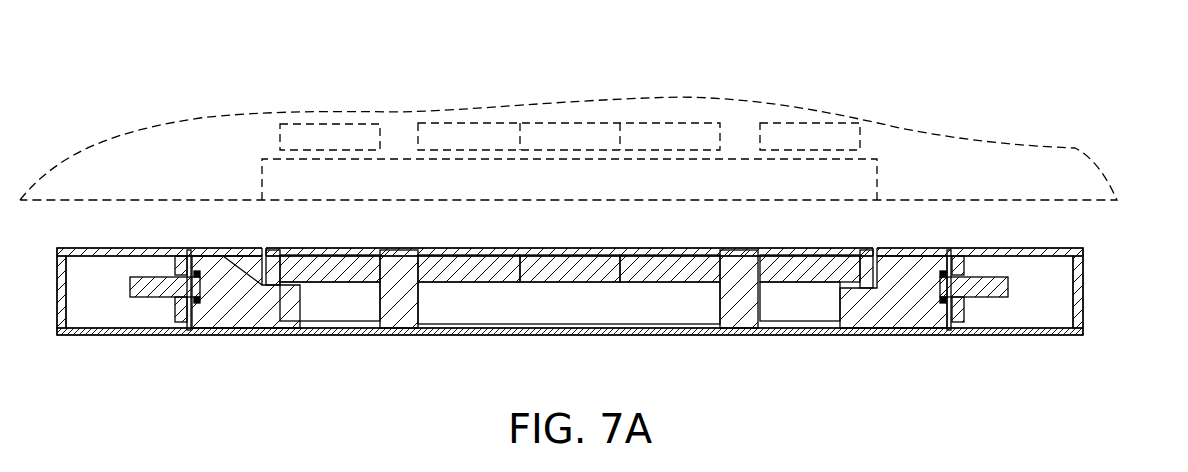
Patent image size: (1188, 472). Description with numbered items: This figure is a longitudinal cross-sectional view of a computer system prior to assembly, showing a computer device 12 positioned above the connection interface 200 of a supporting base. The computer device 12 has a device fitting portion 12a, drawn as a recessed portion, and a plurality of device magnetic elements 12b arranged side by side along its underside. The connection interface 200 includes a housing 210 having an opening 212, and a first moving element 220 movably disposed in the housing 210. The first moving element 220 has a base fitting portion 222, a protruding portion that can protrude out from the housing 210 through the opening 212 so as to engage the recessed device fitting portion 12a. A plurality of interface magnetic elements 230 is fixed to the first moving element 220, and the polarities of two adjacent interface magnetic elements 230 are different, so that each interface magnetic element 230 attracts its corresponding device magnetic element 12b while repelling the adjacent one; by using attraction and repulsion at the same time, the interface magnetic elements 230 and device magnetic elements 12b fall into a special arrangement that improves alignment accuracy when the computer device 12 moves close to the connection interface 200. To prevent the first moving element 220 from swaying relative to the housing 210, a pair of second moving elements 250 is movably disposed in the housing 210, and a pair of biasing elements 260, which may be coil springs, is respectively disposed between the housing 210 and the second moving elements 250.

The computer device 12 is at (1078, 150).
The device fitting portion 12a is at (506, 188).
The device magnetic element 12b is at (838, 138).
The connection interface 200 is at (1102, 257).
The housing 210 is at (1085, 300).
The opening 212 is at (870, 253).
The first moving element 220 is at (569, 293).
The base fitting portion 222 is at (724, 262).
The interface magnetic element 230 is at (767, 262).
The second moving element 250 is at (888, 320).
The biasing element 260 is at (951, 318).